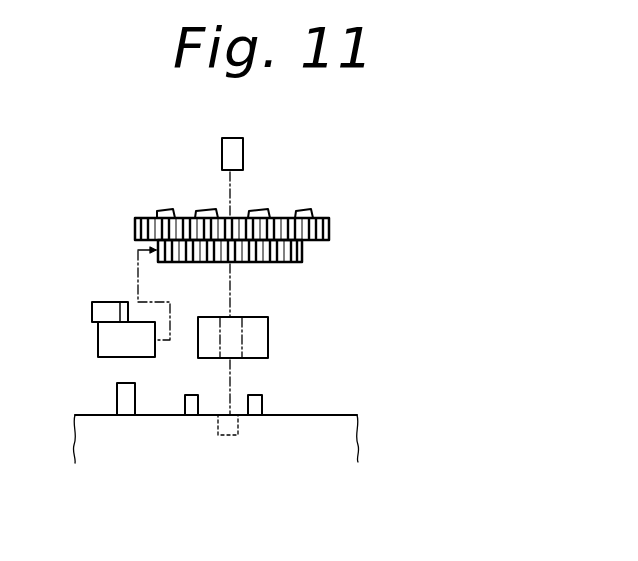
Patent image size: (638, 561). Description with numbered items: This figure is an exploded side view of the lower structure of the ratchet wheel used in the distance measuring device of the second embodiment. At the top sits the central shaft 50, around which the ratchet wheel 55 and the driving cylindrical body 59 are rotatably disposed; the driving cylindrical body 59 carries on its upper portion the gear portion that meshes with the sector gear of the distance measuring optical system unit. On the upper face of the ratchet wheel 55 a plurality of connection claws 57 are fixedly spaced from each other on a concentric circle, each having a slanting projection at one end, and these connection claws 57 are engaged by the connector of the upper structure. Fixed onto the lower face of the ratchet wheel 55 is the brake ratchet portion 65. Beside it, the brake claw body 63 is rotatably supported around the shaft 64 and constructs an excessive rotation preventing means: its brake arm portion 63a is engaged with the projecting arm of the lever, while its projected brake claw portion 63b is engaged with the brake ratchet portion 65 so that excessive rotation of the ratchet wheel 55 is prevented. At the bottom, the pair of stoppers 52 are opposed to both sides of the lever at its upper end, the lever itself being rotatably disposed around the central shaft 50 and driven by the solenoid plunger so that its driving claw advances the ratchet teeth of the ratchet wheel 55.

The central shaft 50 is at (223, 152).
The stoppers 52 is at (287, 392).
The ratchet wheel 55 is at (322, 218).
The connection claws 57 is at (160, 209).
The driving cylindrical body 59 is at (268, 335).
The brake claw body 63 is at (97, 332).
The brake arm portion 63a is at (100, 348).
The brake claw portion 63b is at (118, 300).
The shaft 64 is at (117, 398).
The brake ratchet portion 65 is at (302, 260).